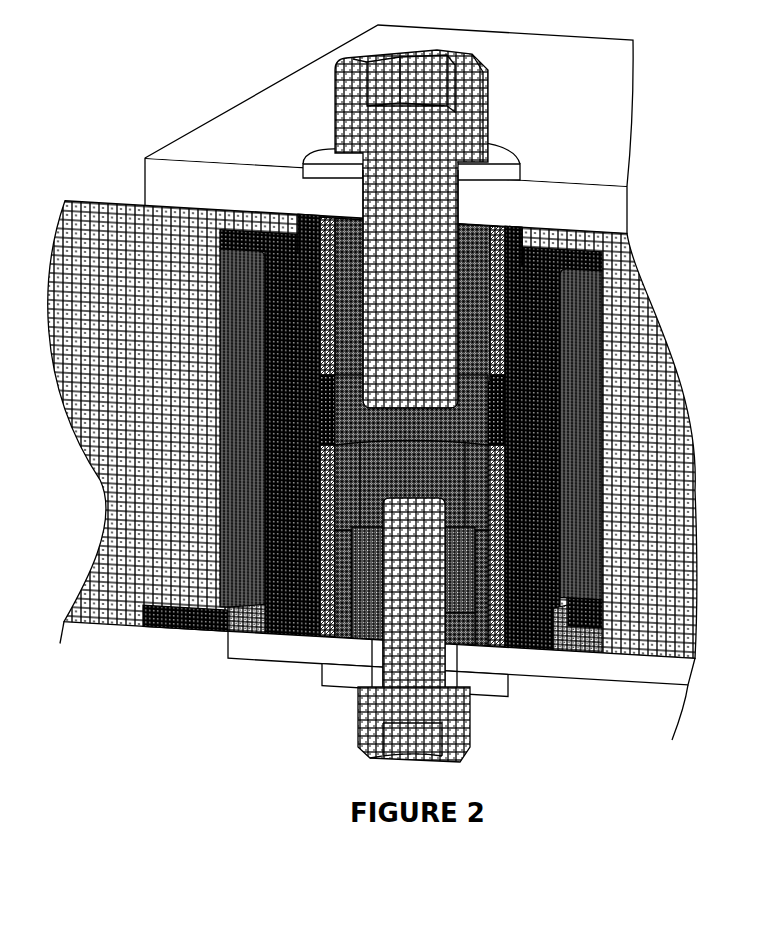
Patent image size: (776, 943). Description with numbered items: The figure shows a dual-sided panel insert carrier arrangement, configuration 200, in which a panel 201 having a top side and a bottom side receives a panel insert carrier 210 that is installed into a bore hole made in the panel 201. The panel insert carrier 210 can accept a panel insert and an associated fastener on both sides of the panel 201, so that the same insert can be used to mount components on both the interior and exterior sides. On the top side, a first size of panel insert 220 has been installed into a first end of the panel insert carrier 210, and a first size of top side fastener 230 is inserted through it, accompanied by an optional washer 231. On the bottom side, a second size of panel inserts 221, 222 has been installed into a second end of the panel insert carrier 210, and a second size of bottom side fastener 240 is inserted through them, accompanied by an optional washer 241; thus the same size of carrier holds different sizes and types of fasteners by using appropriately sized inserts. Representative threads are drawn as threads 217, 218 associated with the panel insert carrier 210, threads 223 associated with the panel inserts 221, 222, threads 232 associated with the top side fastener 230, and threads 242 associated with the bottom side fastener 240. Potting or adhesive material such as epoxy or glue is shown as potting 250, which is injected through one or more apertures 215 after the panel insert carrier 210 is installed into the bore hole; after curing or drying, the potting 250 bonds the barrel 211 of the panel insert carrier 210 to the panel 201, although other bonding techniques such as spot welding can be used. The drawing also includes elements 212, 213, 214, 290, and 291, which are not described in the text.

The configuration 200 is at (70, 50).
The panel 201 is at (108, 307).
The panel insert carrier 210 is at (303, 409).
The barrel 211 is at (427, 435).
The bottom flange 212 is at (172, 632).
The top flange 213 is at (233, 230).
The web 214 is at (478, 427).
The apertures 215 is at (250, 622).
The threads 217 is at (518, 232).
The threads 218 is at (325, 633).
The panel insert 220 is at (361, 241).
The panel insert 221 is at (398, 466).
The panel insert 222 is at (473, 630).
The threads 223 is at (332, 607).
The top side fastener 230 is at (387, 229).
The washer 231 is at (512, 148).
The threads 232 is at (454, 338).
The bottom side fastener 240 is at (357, 722).
The washer 241 is at (489, 697).
The threads 242 is at (441, 566).
The potting 250 is at (256, 512).
The top plate 290 is at (249, 165).
The bottom plate 291 is at (620, 688).